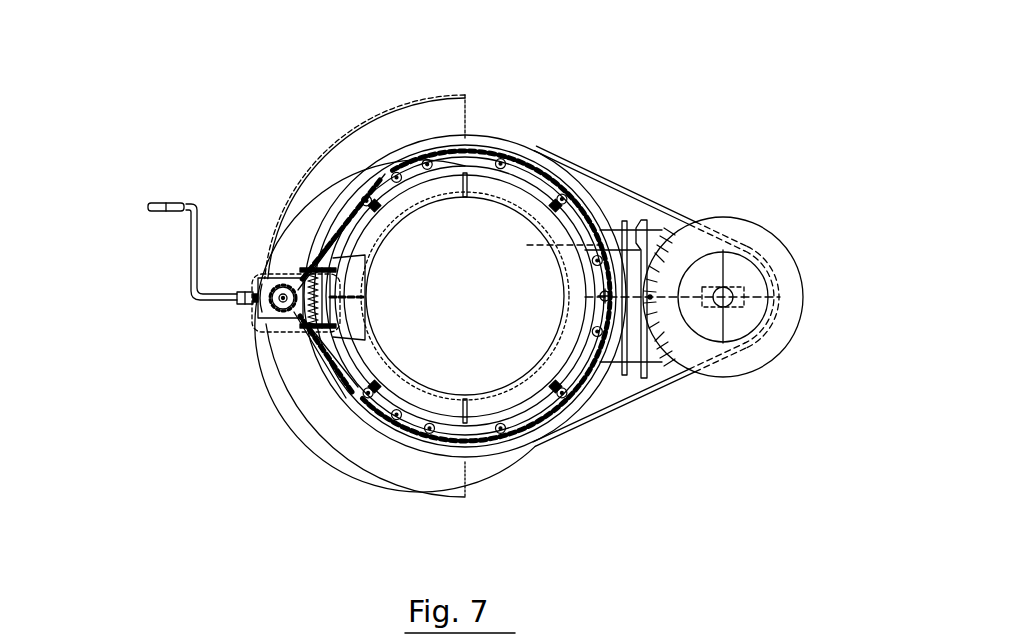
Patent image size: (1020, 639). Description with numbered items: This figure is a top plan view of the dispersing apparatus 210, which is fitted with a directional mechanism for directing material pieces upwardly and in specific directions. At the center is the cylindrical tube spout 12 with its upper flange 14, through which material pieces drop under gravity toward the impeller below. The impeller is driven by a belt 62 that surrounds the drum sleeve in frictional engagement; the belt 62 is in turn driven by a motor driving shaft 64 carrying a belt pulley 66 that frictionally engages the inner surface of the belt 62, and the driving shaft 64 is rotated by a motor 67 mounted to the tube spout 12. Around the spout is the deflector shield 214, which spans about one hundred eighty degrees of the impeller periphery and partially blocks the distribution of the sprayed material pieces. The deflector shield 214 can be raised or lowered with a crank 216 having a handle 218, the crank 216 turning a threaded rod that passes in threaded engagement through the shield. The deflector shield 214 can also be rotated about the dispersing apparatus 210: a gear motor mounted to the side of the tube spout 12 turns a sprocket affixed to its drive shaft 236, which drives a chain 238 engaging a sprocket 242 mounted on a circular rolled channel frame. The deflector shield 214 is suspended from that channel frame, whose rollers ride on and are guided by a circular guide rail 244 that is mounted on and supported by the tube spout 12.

The dispersing apparatus 210 is at (628, 108).
The deflector shield 214 is at (360, 132).
The tube spout 12 is at (518, 382).
The upper flange 14 is at (538, 390).
The belt 62 is at (640, 195).
The motor driving shaft 64 is at (730, 307).
The belt pulley 66 is at (745, 274).
The motor 67 is at (800, 315).
The crank 216 is at (187, 280).
The handle 218 is at (158, 214).
The drive shaft 236 is at (267, 322).
The chain 238 is at (257, 310).
The sprocket 242 is at (383, 405).
The circular guide rail 244 is at (520, 422).